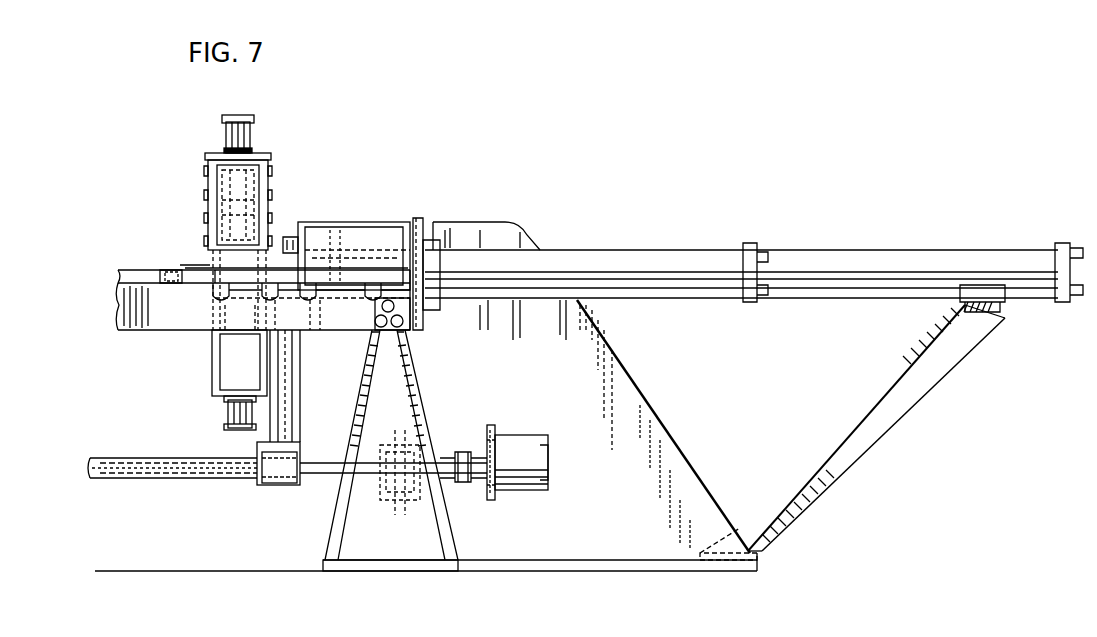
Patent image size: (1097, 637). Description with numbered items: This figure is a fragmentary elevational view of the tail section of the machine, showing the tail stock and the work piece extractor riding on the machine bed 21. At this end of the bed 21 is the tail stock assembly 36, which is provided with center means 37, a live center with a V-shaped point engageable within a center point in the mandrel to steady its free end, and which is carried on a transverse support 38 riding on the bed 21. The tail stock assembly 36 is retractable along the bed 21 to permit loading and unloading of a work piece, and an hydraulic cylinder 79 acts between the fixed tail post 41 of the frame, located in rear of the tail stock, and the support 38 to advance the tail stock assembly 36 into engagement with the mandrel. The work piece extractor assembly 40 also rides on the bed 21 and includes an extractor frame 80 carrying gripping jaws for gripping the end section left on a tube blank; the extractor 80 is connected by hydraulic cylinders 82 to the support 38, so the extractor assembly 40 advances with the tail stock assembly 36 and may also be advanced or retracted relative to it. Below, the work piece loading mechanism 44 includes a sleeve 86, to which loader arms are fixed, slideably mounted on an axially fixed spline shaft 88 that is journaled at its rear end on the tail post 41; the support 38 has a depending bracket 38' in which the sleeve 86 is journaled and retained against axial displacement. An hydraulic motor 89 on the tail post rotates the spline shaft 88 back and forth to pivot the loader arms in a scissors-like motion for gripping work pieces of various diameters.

The machine bed 21 is at (168, 334).
The tail stock assembly 36 is at (365, 196).
The center means 37 is at (163, 267).
The transverse support 38 is at (371, 241).
The depending bracket 38' is at (308, 386).
The work piece extractor assembly 40 is at (277, 142).
The fixed tail post 41 is at (613, 383).
The work piece loading mechanism 44 is at (210, 500).
The hydraulic cylinder 79 is at (852, 248).
The extractor frame 80 is at (272, 178).
The hydraulic cylinders 82 is at (718, 255).
The sleeve 86 is at (168, 468).
The spline shaft 88 is at (325, 473).
The hydraulic motor 89 is at (545, 492).